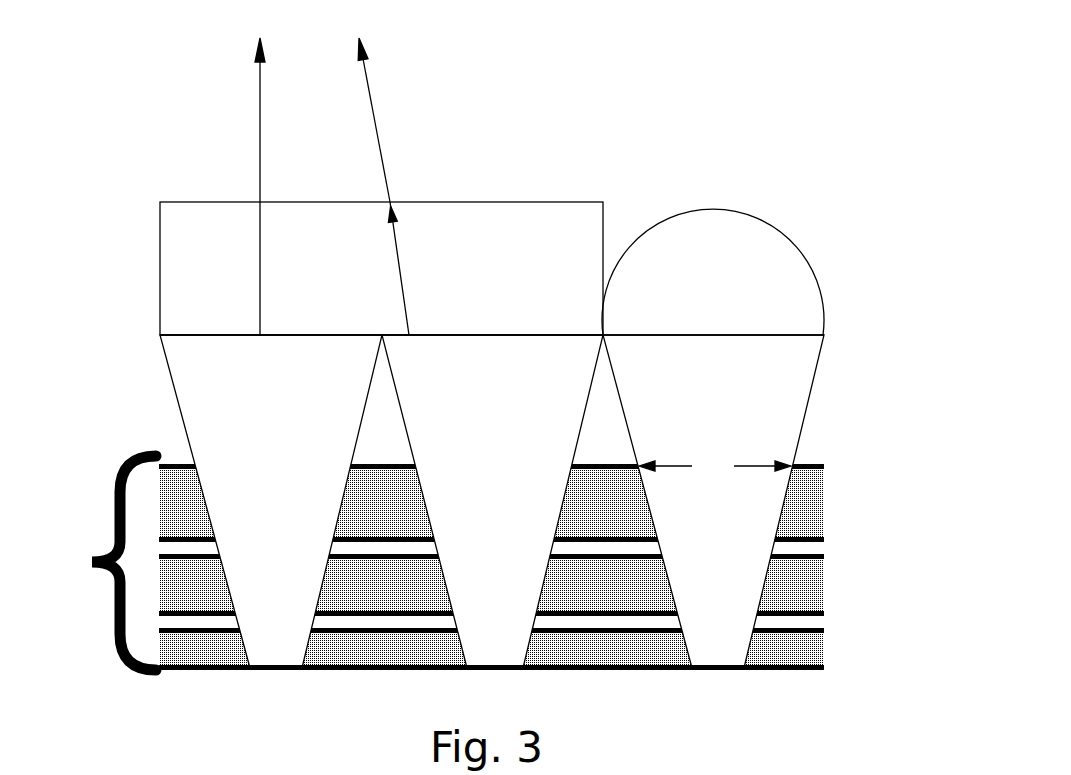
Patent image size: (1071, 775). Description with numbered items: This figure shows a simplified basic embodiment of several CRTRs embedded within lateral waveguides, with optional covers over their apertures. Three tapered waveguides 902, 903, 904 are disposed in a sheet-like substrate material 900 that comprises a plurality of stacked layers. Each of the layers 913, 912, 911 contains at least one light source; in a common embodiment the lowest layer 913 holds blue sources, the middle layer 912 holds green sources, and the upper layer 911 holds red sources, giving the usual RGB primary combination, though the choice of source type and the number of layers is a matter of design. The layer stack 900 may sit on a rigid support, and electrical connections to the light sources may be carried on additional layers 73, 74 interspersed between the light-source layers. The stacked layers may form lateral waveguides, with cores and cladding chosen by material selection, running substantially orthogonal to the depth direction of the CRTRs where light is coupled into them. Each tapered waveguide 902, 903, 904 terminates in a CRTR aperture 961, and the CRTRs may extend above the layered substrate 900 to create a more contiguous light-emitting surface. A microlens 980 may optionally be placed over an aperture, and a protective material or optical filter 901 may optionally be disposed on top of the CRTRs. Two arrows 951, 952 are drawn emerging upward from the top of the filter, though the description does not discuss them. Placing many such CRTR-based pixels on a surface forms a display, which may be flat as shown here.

The layered substrate 900 is at (486, 401).
The protective material or optical filter 901 is at (381, 268).
The microlens 980 is at (713, 272).
The tapered waveguide 902 is at (271, 501).
The tapered waveguide 903 is at (492, 501).
The tapered waveguide 904 is at (713, 501).
The light-source layer 911 is at (491, 500).
The light-source layer 912 is at (491, 585).
The light-source layer 913 is at (491, 649).
The additional layer 74 is at (826, 547).
The additional layer 73 is at (826, 623).
The first light ray 951 is at (267, 176).
The second light ray 952 is at (384, 176).
The CRTR aperture 961 is at (715, 465).